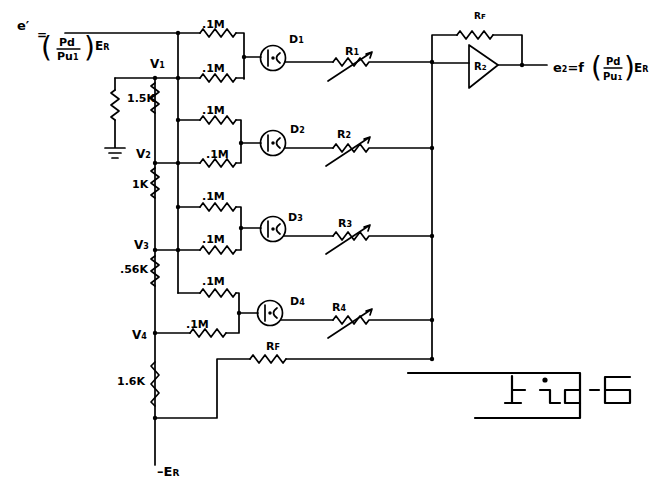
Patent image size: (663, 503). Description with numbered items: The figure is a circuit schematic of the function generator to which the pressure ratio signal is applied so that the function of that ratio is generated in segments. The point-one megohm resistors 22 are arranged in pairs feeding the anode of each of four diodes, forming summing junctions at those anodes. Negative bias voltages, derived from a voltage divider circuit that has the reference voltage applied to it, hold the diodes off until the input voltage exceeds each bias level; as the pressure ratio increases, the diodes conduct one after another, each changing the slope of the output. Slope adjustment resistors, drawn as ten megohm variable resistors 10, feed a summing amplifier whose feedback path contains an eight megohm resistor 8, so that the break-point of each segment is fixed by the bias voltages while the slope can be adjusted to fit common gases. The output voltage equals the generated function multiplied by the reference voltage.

The .1 meg. resistors 22 is at (226, 194).
The variable resistor (10M) 10 is at (379, 197).
The feedback resistor (8M) 8 is at (371, 199).